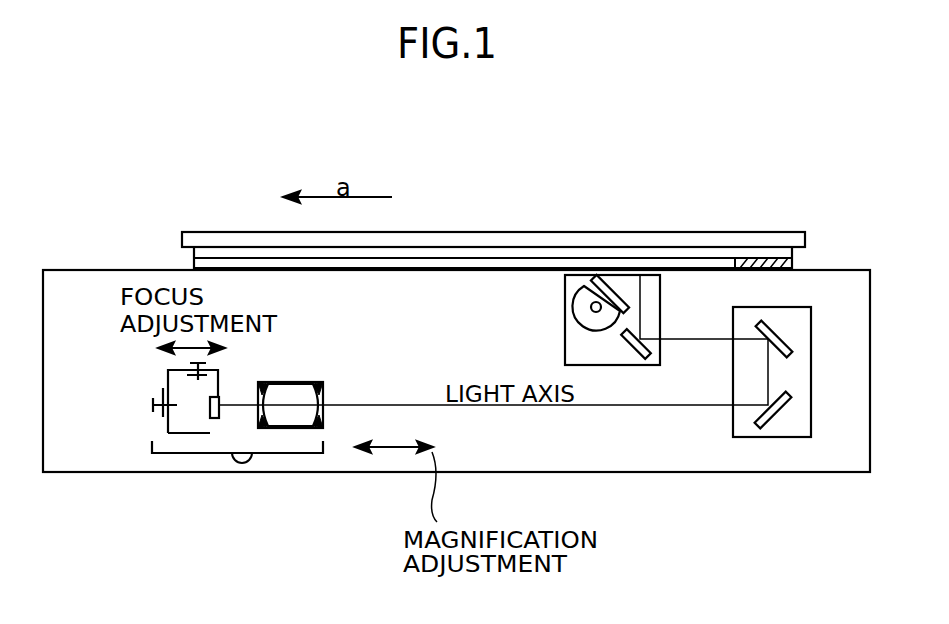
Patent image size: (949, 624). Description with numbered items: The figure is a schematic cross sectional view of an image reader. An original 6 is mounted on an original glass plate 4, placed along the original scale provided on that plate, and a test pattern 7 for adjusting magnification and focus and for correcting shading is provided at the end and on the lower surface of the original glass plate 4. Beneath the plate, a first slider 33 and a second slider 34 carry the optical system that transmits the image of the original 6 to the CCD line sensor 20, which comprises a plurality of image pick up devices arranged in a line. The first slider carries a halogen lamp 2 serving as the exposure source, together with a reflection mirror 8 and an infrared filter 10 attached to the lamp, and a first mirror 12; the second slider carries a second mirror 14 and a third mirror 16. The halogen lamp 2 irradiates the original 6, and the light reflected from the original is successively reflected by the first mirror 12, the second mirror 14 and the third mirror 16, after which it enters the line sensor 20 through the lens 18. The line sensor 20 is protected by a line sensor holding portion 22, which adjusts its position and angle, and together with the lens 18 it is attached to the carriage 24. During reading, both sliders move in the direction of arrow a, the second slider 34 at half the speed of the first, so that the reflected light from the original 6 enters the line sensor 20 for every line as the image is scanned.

The halogen lamp 2 is at (592, 312).
The original glass plate 4 is at (480, 267).
The original 6 is at (530, 256).
The test pattern 7 is at (793, 264).
The reflection mirror 8 is at (573, 304).
The infrared filter 10 is at (603, 280).
The first mirror 12 is at (630, 352).
The second mirror 14 is at (786, 342).
The third mirror 16 is at (790, 402).
The lens 18 is at (293, 420).
The CCD line sensor 20 is at (209, 410).
The line sensor holding portion 22 is at (164, 419).
The carriage 24 is at (310, 455).
The first slider 33 is at (648, 280).
The second slider 34 is at (797, 438).